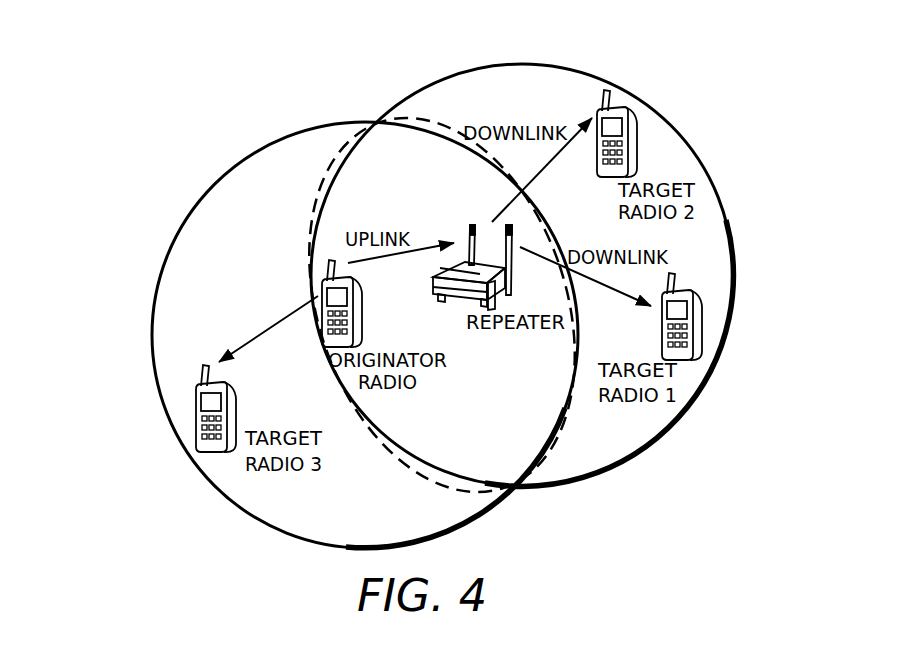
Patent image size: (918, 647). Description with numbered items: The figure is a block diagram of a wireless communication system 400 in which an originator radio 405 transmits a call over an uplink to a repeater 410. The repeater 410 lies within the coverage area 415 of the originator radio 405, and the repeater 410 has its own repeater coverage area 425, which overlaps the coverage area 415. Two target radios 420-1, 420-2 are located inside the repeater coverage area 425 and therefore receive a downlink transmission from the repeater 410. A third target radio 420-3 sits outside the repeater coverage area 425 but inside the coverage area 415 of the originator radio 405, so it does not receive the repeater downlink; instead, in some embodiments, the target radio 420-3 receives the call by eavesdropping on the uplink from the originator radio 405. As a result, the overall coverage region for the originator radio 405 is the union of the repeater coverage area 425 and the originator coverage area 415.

The wireless communication system 400 is at (141, 140).
The originator radio 405 is at (363, 313).
The repeater 410 is at (435, 281).
The coverage area of the originator radio 415 is at (150, 334).
The target radio 420-1 is at (662, 328).
The target radio 420-2 is at (603, 105).
The target radio 420-3 is at (220, 381).
The repeater coverage area 425 is at (500, 63).